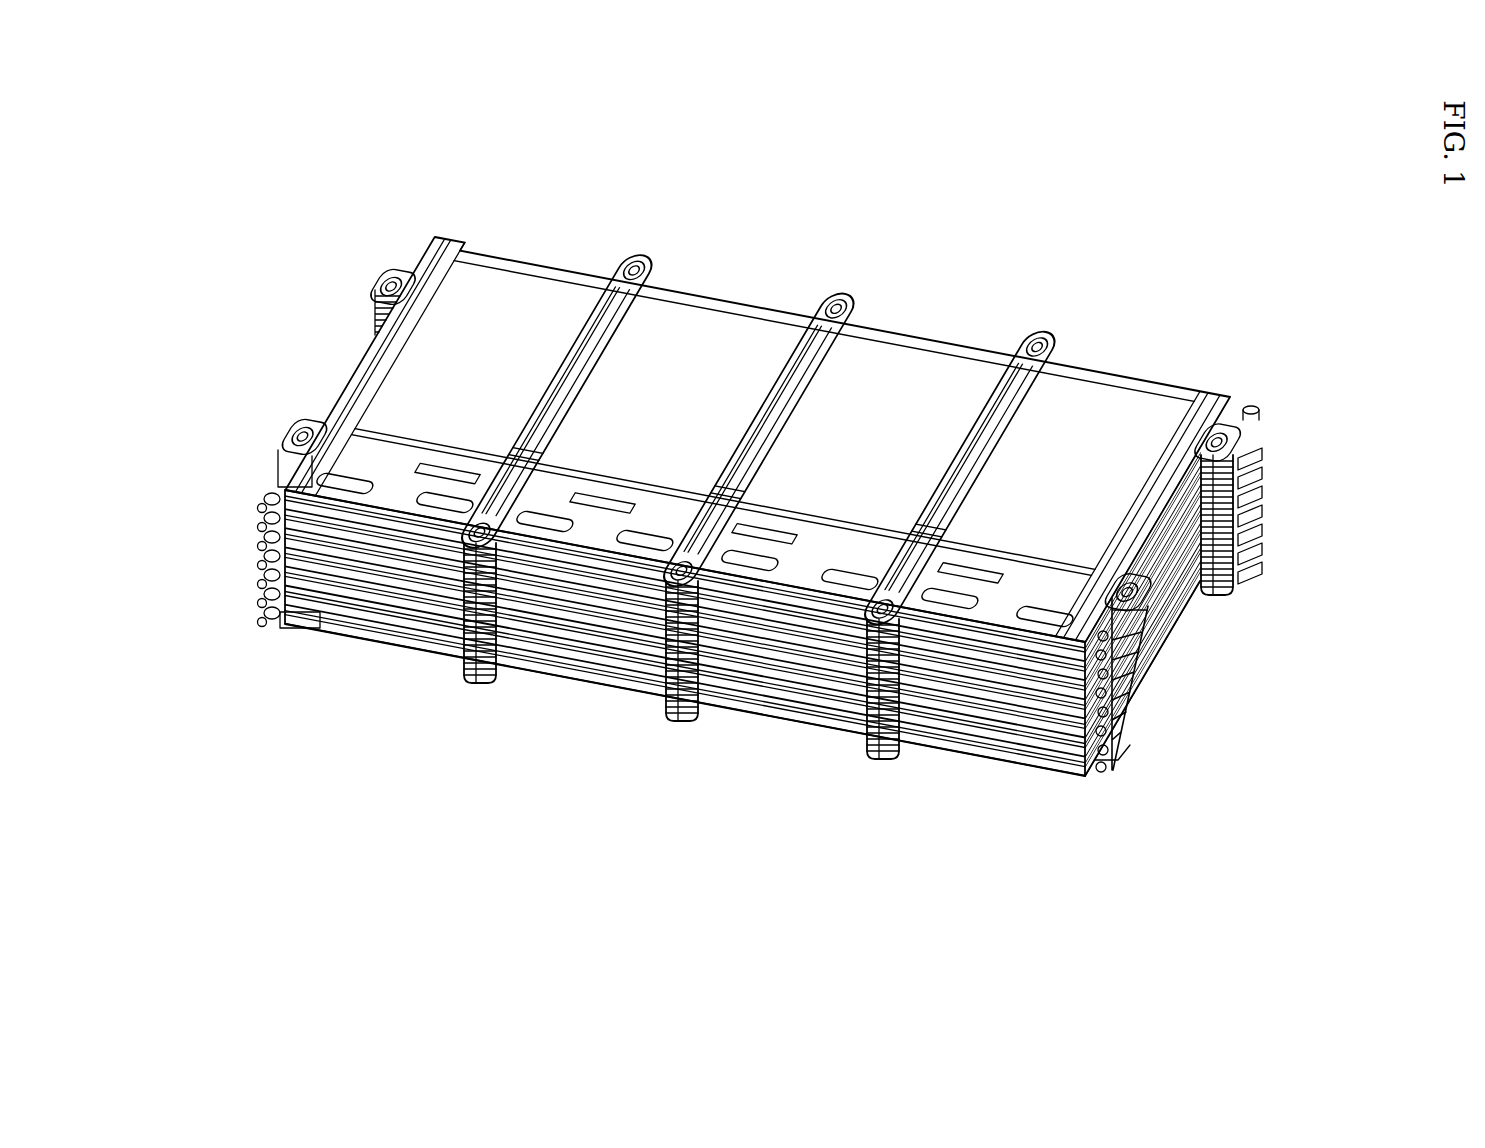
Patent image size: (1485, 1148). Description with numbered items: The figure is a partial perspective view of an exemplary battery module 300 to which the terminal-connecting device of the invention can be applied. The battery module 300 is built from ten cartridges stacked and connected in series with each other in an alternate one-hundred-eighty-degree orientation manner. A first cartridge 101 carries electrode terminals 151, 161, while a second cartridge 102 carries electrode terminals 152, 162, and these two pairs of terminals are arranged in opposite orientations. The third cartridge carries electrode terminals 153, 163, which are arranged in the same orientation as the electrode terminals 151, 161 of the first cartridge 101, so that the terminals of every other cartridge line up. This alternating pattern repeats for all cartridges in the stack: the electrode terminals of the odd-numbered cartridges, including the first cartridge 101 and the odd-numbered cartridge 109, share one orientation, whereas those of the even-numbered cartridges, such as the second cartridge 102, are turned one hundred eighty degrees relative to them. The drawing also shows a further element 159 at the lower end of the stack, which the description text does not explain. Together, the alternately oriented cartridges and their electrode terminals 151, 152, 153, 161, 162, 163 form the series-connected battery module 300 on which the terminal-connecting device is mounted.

The battery module 300 is at (822, 226).
The first cartridge 101 is at (1082, 648).
The second cartridge 102 is at (1265, 447).
The odd-numbered cartridge 109 is at (292, 610).
The electrode terminal 151 is at (1152, 660).
The electrode terminal 152 is at (428, 247).
The electrode terminal 153 is at (263, 521).
The bottom end member 159 is at (1117, 770).
The electrode terminal 161 is at (263, 496).
The electrode terminal 162 is at (1253, 410).
The electrode terminal 163 is at (1160, 673).